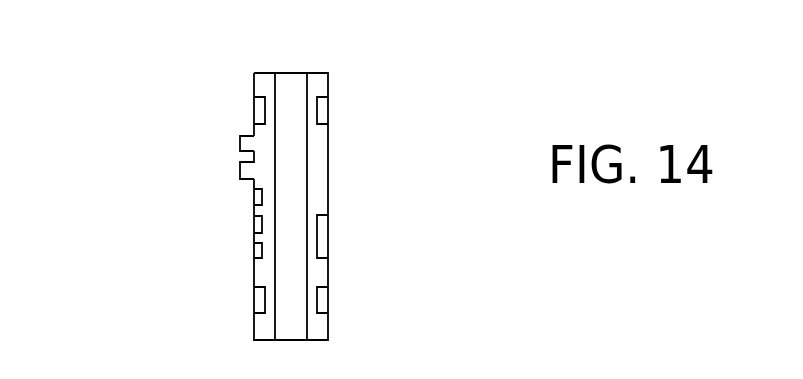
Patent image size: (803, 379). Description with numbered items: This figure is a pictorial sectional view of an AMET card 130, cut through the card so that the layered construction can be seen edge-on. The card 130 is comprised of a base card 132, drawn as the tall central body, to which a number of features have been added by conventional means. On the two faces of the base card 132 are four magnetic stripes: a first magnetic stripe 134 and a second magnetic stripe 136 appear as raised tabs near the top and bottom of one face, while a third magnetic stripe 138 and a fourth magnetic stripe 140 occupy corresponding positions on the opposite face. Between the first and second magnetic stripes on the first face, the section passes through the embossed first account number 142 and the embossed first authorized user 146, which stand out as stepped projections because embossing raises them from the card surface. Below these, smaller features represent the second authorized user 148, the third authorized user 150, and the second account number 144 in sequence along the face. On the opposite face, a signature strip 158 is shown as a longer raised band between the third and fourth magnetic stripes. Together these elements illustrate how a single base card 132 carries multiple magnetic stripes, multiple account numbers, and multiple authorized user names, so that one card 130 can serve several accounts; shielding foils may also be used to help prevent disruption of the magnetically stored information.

The AMET card 130 is at (348, 182).
The base card 132 is at (290, 72).
The first magnetic stripe 134 is at (253, 107).
The second magnetic stripe 136 is at (254, 297).
The third magnetic stripe 138 is at (328, 107).
The fourth magnetic stripe 140 is at (328, 301).
The embossed first account number 142 is at (240, 141).
The second account number 144 is at (254, 258).
The embossed first authorized user 146 is at (240, 172).
The second authorized user 148 is at (254, 202).
The third authorized user 150 is at (254, 230).
The signature strip 158 is at (328, 237).